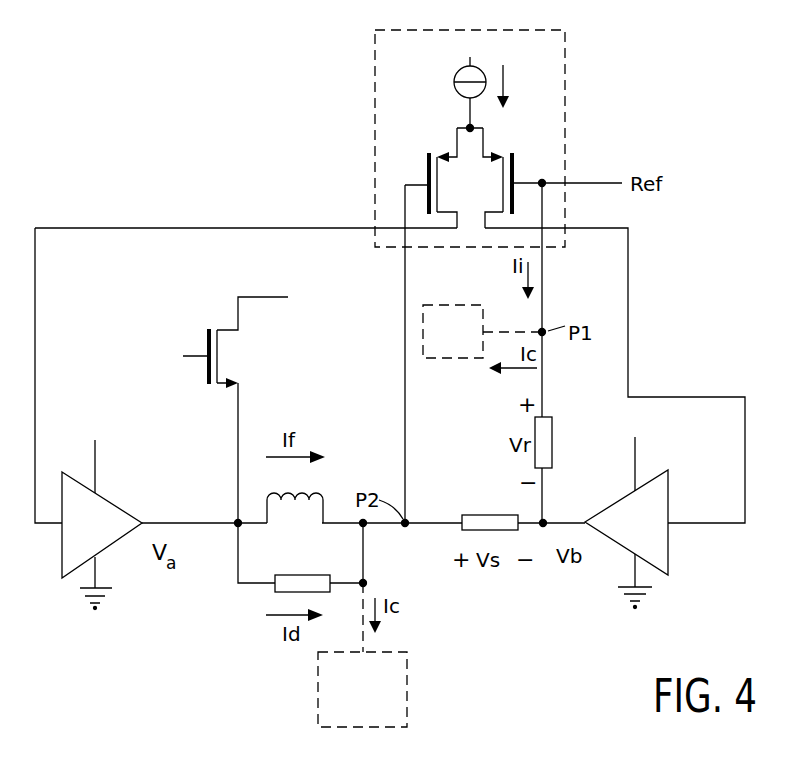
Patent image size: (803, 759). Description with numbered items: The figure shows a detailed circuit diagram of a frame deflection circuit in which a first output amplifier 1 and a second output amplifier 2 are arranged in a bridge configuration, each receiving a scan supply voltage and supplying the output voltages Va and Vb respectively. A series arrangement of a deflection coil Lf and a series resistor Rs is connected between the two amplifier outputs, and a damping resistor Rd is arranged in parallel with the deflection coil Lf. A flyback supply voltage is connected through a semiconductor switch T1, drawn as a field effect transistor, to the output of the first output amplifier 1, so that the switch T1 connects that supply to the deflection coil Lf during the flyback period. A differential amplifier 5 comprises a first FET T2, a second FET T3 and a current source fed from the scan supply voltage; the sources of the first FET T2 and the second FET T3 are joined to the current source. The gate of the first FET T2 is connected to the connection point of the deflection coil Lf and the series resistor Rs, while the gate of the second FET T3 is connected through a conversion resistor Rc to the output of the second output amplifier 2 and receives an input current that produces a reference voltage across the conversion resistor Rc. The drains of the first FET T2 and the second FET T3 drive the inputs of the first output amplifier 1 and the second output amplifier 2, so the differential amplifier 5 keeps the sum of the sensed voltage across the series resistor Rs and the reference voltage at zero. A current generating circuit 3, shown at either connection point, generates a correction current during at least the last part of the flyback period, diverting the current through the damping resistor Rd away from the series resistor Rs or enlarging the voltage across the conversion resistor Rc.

The first output amplifier 1 is at (73, 492).
The second output amplifier 2 is at (674, 490).
The current generating circuit 3 is at (443, 310).
The differential amplifier 5 is at (372, 45).
The semiconductor switch T1 is at (226, 362).
The first FET T2 is at (427, 152).
The second FET T3 is at (513, 151).
The conversion resistor Rc is at (552, 438).
The series resistor Rs is at (472, 515).
The damping resistor Rd is at (306, 582).
The deflection coil Lf is at (285, 497).